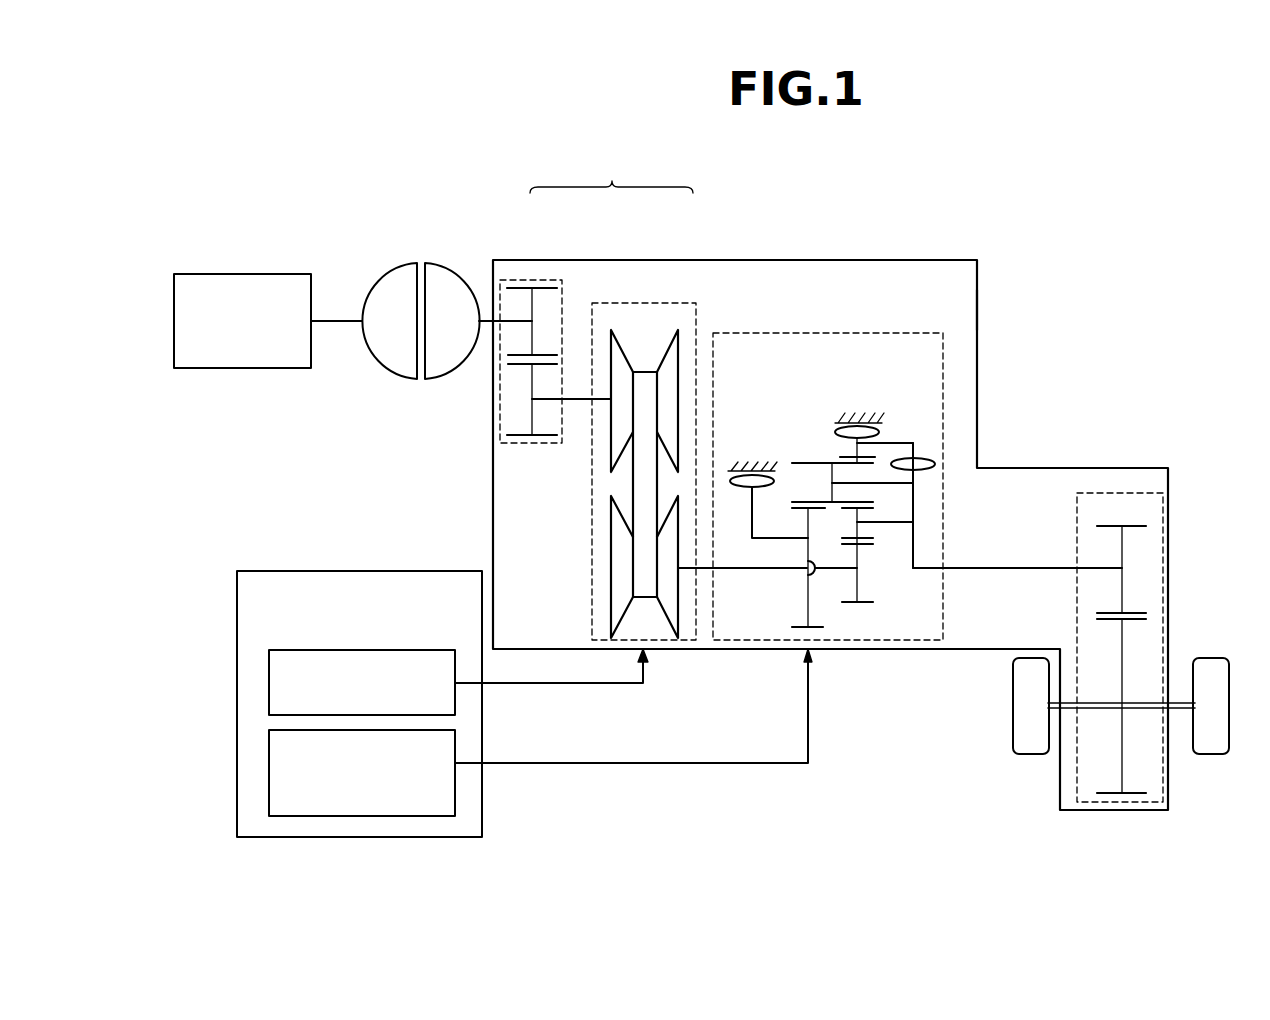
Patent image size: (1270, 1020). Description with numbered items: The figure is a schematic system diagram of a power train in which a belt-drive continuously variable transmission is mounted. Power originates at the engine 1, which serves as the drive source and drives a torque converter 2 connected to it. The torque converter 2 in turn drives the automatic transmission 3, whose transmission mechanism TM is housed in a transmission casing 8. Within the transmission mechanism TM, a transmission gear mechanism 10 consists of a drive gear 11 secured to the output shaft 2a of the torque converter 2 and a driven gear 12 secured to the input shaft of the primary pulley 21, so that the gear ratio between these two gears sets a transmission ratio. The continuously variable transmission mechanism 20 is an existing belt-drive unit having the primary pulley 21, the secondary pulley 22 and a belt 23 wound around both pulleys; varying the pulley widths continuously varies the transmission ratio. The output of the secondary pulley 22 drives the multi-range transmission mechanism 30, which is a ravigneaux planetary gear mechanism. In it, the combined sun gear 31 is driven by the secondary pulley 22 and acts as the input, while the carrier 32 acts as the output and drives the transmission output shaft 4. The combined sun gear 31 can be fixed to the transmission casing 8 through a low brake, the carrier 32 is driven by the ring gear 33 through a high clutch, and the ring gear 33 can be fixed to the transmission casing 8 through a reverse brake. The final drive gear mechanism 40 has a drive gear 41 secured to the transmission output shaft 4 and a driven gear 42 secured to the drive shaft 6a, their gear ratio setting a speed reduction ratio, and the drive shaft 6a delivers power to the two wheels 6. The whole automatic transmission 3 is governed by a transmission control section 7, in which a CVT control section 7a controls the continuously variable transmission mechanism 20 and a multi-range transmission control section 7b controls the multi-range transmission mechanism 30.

The engine 1 is at (240, 274).
The torque converter 2 is at (372, 266).
The output shaft of the torque converter 2a is at (488, 328).
The automatic transmission 3 is at (894, 248).
The transmission casing 8 is at (977, 307).
The transmission mechanism TM is at (611, 171).
The transmission gear mechanism 10 is at (531, 266).
The drive gear 11 is at (530, 305).
The driven gear 12 is at (530, 417).
The continuously variable transmission mechanism 20 is at (618, 286).
The primary pulley 21 is at (626, 352).
The secondary pulley 22 is at (620, 580).
The belt 23 is at (642, 484).
The multi-range transmission mechanism 30 is at (737, 316).
The combined sun gear 31 is at (836, 616).
The carrier 32 is at (939, 510).
The ring gear 33 is at (825, 447).
The transmission output shaft 4 is at (1037, 568).
The final drive gear mechanism 40 is at (1102, 474).
The drive gear 41 is at (1123, 594).
The driven gear 42 is at (1123, 670).
The wheels 6 is at (1033, 657).
The drive shaft 6a is at (1183, 712).
The transmission control section 7 is at (362, 571).
The CVT control section 7a is at (269, 680).
The multi-range transmission control section 7b is at (269, 760).